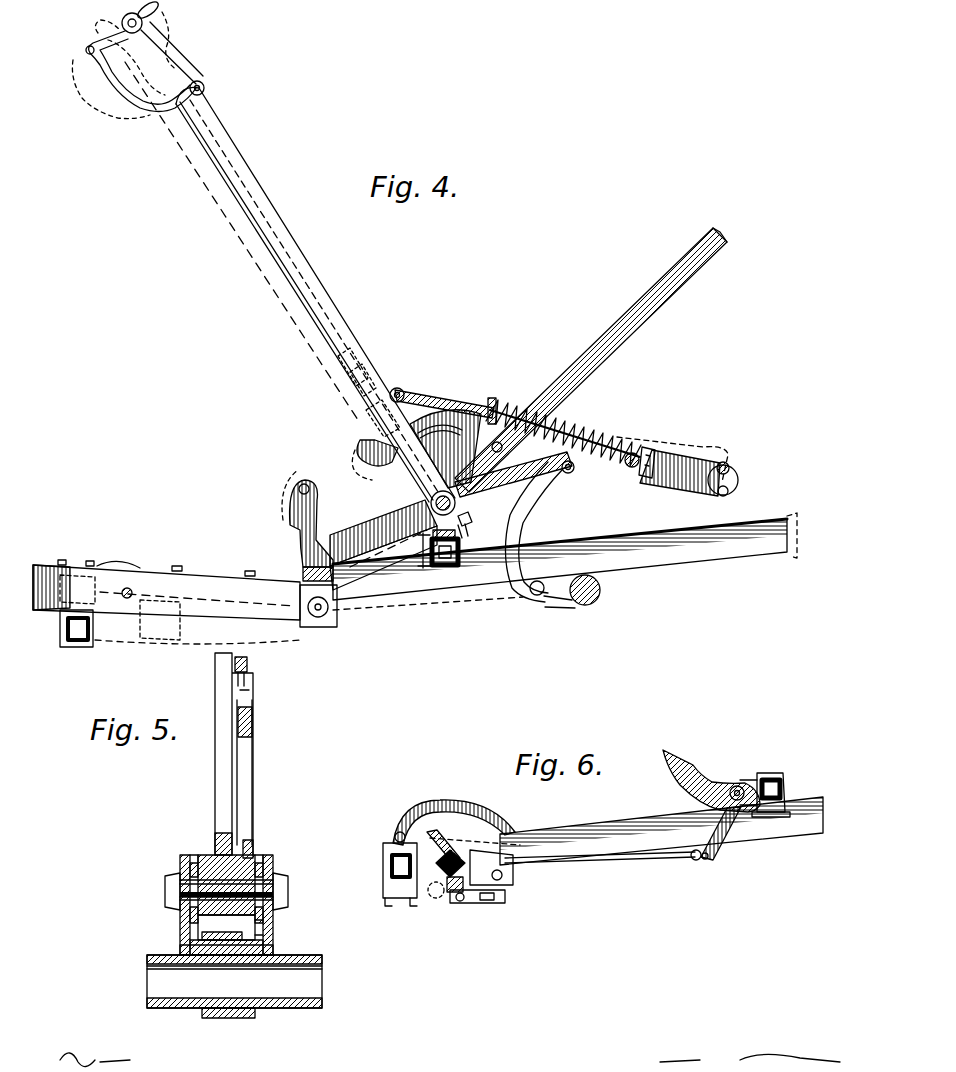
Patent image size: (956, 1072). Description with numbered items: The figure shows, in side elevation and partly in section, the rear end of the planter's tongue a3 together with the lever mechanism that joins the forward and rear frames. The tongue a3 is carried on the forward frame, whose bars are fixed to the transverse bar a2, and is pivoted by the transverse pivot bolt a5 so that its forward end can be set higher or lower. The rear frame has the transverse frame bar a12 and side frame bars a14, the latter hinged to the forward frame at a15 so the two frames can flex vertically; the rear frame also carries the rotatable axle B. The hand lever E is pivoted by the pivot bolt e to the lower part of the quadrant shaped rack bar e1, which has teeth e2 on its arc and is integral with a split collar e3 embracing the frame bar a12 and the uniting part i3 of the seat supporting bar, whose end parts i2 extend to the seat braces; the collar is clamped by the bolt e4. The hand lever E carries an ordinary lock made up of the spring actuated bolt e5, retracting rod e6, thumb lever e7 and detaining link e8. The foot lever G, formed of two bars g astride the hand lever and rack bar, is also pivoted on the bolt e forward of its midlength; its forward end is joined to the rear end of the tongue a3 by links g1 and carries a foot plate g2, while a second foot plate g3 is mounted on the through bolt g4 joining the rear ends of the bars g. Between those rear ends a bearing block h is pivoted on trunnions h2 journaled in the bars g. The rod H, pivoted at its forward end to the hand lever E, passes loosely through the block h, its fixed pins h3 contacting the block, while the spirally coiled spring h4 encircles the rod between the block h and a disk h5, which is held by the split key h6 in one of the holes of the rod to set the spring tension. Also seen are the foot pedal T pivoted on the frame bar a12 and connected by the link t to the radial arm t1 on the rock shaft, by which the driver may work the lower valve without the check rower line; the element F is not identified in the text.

In FIG. 4, the hand lever E is at (372, 299).
In FIG. 5, the hand lever E is at (218, 778).
In FIG. 4, the pivot bolt e is at (430, 500).
In FIG. 5, the pivot bolt e is at (265, 890).
In FIG. 5, the rack bar e1 is at (250, 745).
In FIG. 4, the teeth e2 is at (380, 433).
In FIG. 4, the split collar e3 is at (458, 538).
In FIG. 5, the split collar e3 is at (200, 940).
In FIG. 4, the bolt e4 is at (388, 413).
In FIG. 5, the spring actuated bolt e5 is at (250, 690).
In FIG. 4, the retracting rod e6 is at (345, 345).
In FIG. 4, the thumb lever e7 is at (142, 100).
In FIG. 4, the detaining link e8 is at (128, 14).
In FIG. 4, the rod H is at (475, 401).
In FIG. 4, the bearing block h is at (632, 450).
In FIG. 4, the trunnions h2 is at (630, 470).
In FIG. 4, the fixed pins h3 is at (652, 452).
In FIG. 4, the spirally coiled spring h4 is at (560, 428).
In FIG. 4, the disk h5 is at (507, 420).
In FIG. 4, the split key h6 is at (492, 400).
In FIG. 4, the foot lever G is at (380, 505).
In FIG. 4, the bars g is at (688, 482).
In FIG. 5, the bars g is at (192, 862).
In FIG. 4, the links g1 is at (298, 578).
In FIG. 4, the foot plate g2 is at (293, 500).
In FIG. 4, the foot plate g3 is at (730, 467).
In FIG. 4, the through bolt g4 is at (729, 491).
In FIG. 5, the end parts i2 is at (182, 860).
In FIG. 4, the uniting part i3 is at (462, 521).
In FIG. 5, the uniting part i3 is at (275, 938).
In FIG. 4, the transverse bar a2 is at (80, 645).
In FIG. 6, the transverse bar a2 is at (385, 870).
In FIG. 4, the tongue a3 is at (205, 584).
In FIG. 4, the transverse pivot bolt a5 is at (127, 600).
In FIG. 4, the transverse frame bar a12 is at (455, 568).
In FIG. 5, the transverse frame bar a12 is at (165, 982).
In FIG. 6, the transverse frame bar a12 is at (768, 775).
In FIG. 4, the side frame bars a14 is at (700, 554).
In FIG. 6, the side frame bars a14 is at (622, 830).
In FIG. 4, the hinge a15 is at (62, 615).
In FIG. 6, the hinge a15 is at (395, 835).
In FIG. 4, the axle B is at (598, 603).
In FIG. 6, the foot pedal T is at (714, 795).
In FIG. 6, the link t is at (610, 858).
In FIG. 6, the radial arm t1 is at (440, 848).
In FIG. 6, the latch F is at (433, 880).